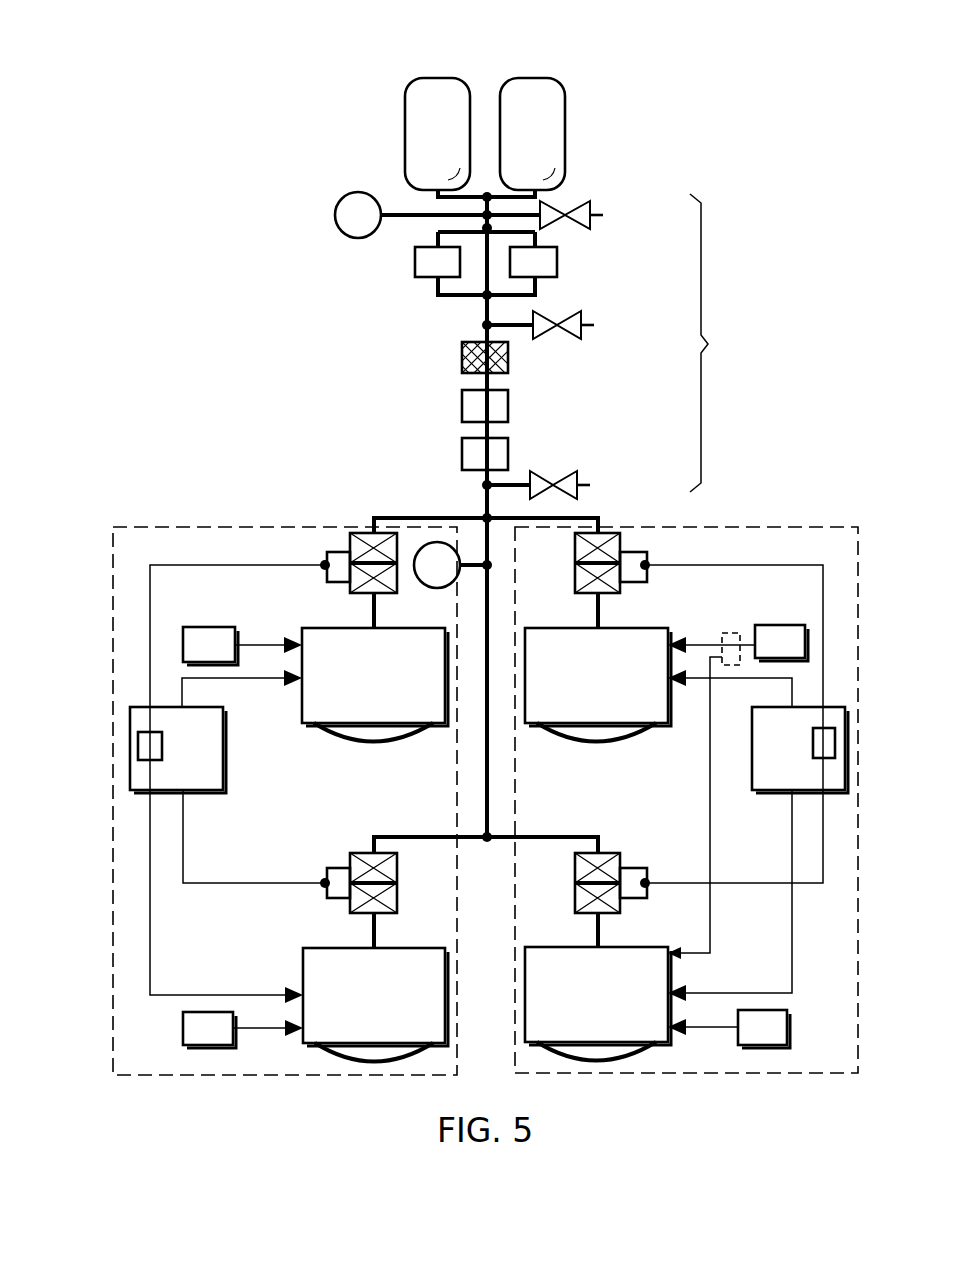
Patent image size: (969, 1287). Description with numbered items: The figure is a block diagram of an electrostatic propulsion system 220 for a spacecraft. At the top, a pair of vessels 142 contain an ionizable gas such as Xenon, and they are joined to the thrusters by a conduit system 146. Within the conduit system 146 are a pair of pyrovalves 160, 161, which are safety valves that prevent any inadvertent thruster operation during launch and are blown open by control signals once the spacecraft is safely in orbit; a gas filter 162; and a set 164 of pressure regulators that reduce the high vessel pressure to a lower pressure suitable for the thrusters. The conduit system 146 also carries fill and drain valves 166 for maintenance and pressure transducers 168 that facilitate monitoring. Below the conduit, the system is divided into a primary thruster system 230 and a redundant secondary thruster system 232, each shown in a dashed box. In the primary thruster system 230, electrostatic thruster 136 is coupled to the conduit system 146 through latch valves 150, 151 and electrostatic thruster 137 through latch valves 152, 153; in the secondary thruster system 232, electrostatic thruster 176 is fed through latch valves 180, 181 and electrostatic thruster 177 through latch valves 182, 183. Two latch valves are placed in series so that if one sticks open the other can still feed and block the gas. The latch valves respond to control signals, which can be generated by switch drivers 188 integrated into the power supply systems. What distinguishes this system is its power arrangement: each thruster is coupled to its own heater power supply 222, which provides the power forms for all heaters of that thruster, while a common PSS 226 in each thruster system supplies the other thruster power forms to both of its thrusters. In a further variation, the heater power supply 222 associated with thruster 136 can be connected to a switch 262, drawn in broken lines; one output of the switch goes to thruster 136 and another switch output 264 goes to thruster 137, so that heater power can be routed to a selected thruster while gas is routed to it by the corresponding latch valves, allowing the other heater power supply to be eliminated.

The electrostatic propulsion system 220 is at (751, 233).
The vessels 142 is at (405, 128).
The pressure transducers 168 is at (335, 214).
The fill and drain valves 166 is at (603, 213).
The pyrovalve 160 is at (415, 262).
The pyrovalve 161 is at (557, 258).
The conduit system 146 is at (727, 343).
The gas filter 162 is at (508, 356).
The set of pressure regulators 164 is at (517, 385).
The secondary thruster system 232 is at (218, 526).
The primary thruster system 230 is at (774, 523).
The latch valve 180 is at (327, 538).
The latch valve 181 is at (327, 588).
The latch valve 150 is at (620, 536).
The latch valve 151 is at (620, 588).
The latch valve 182 is at (350, 862).
The latch valve 183 is at (327, 905).
The latch valve 152 is at (620, 862).
The latch valve 153 is at (620, 905).
The electrostatic thruster 176 is at (302, 705).
The electrostatic thruster 136 is at (668, 705).
The electrostatic thruster 177 is at (303, 968).
The electrostatic thruster 137 is at (668, 970).
The heater power supply 222 is at (225, 627).
The common PSS 226 is at (223, 765).
The switch drivers 188 is at (138, 745).
The switch 262 is at (725, 633).
The switch output 264 is at (710, 790).